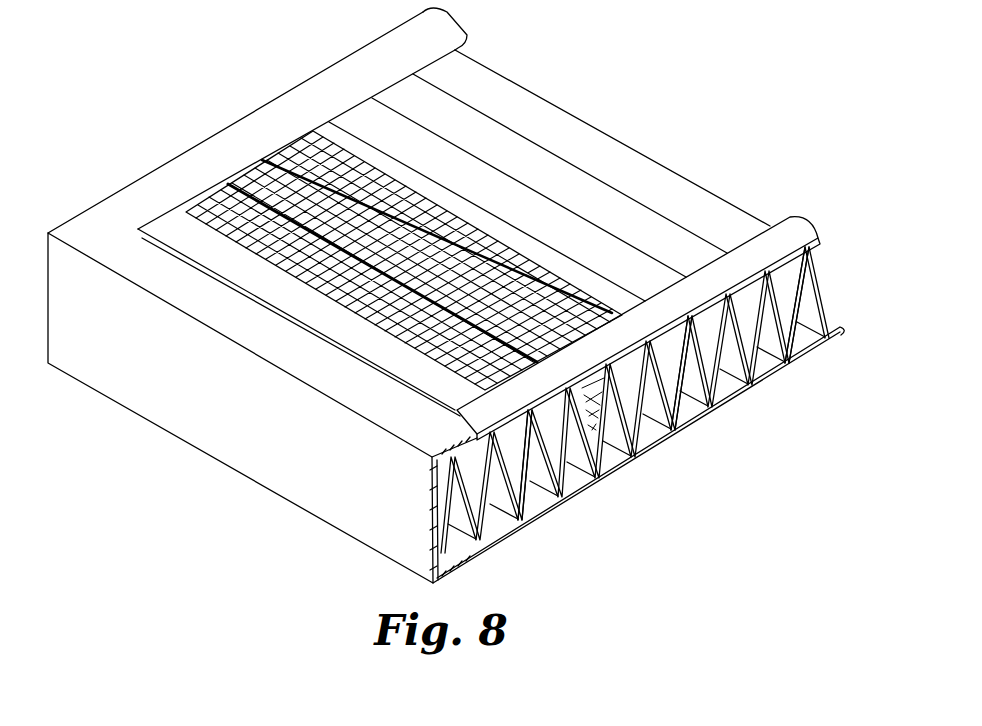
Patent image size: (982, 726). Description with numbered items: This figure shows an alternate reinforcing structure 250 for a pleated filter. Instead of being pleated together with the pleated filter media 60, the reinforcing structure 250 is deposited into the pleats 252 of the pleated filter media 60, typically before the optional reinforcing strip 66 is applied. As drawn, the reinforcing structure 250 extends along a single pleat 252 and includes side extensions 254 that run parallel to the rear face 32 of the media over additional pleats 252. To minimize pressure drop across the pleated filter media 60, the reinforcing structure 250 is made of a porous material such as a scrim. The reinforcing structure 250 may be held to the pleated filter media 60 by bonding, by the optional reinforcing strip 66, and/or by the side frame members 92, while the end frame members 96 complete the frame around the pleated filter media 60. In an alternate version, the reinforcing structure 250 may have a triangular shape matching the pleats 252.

The rear face 32 is at (478, 207).
The pleated filter media 60 is at (672, 165).
The reinforcing strip 66 is at (795, 230).
The side frame members 92 is at (235, 135).
The end frame members 96 is at (213, 441).
The reinforcing structure 250 is at (605, 420).
The pleats 252 is at (793, 278).
The side extensions 254 is at (532, 488).